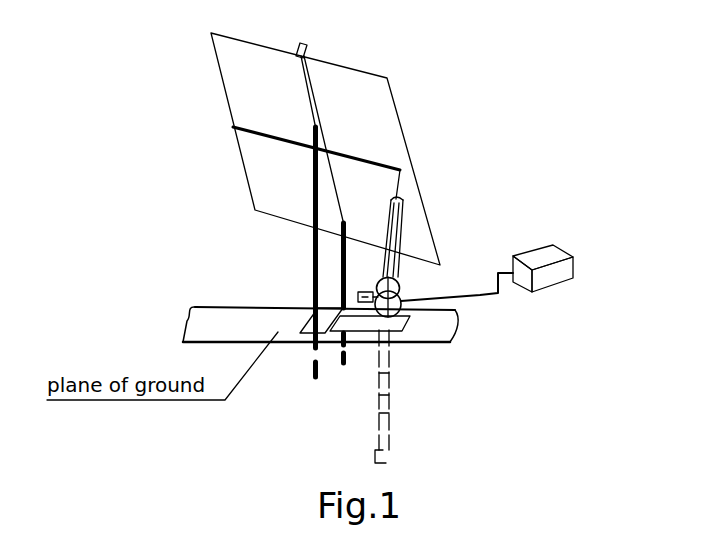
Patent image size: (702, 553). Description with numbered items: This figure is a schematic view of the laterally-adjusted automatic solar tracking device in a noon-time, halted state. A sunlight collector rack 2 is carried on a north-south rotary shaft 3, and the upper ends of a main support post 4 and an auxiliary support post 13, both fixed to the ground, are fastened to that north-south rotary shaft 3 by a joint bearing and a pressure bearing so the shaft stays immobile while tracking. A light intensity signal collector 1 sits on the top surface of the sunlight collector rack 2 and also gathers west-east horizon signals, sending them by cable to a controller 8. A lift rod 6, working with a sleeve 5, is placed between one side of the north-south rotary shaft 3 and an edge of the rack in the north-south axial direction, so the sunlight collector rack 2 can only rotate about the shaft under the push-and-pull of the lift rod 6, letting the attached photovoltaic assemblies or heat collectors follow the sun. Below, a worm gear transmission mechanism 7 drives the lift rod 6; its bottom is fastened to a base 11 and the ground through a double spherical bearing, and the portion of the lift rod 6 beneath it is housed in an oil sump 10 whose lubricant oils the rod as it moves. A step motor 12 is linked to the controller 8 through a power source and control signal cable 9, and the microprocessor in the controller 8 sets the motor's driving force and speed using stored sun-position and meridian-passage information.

The light intensity signal collector 1 is at (304, 47).
The sunlight collector rack 2 is at (390, 93).
The north-south rotary shaft 3 is at (328, 163).
The main support post 4 is at (320, 190).
The sleeve 5 is at (403, 208).
The lift rod 6 is at (403, 235).
The worm gear transmission mechanism 7 is at (403, 298).
The controller 8 is at (535, 250).
The power source and control signal cable 9 is at (477, 297).
The oil sump 10 is at (390, 375).
The base 11 is at (305, 308).
The step motor 12 is at (358, 295).
The auxiliary support post 13 is at (345, 257).